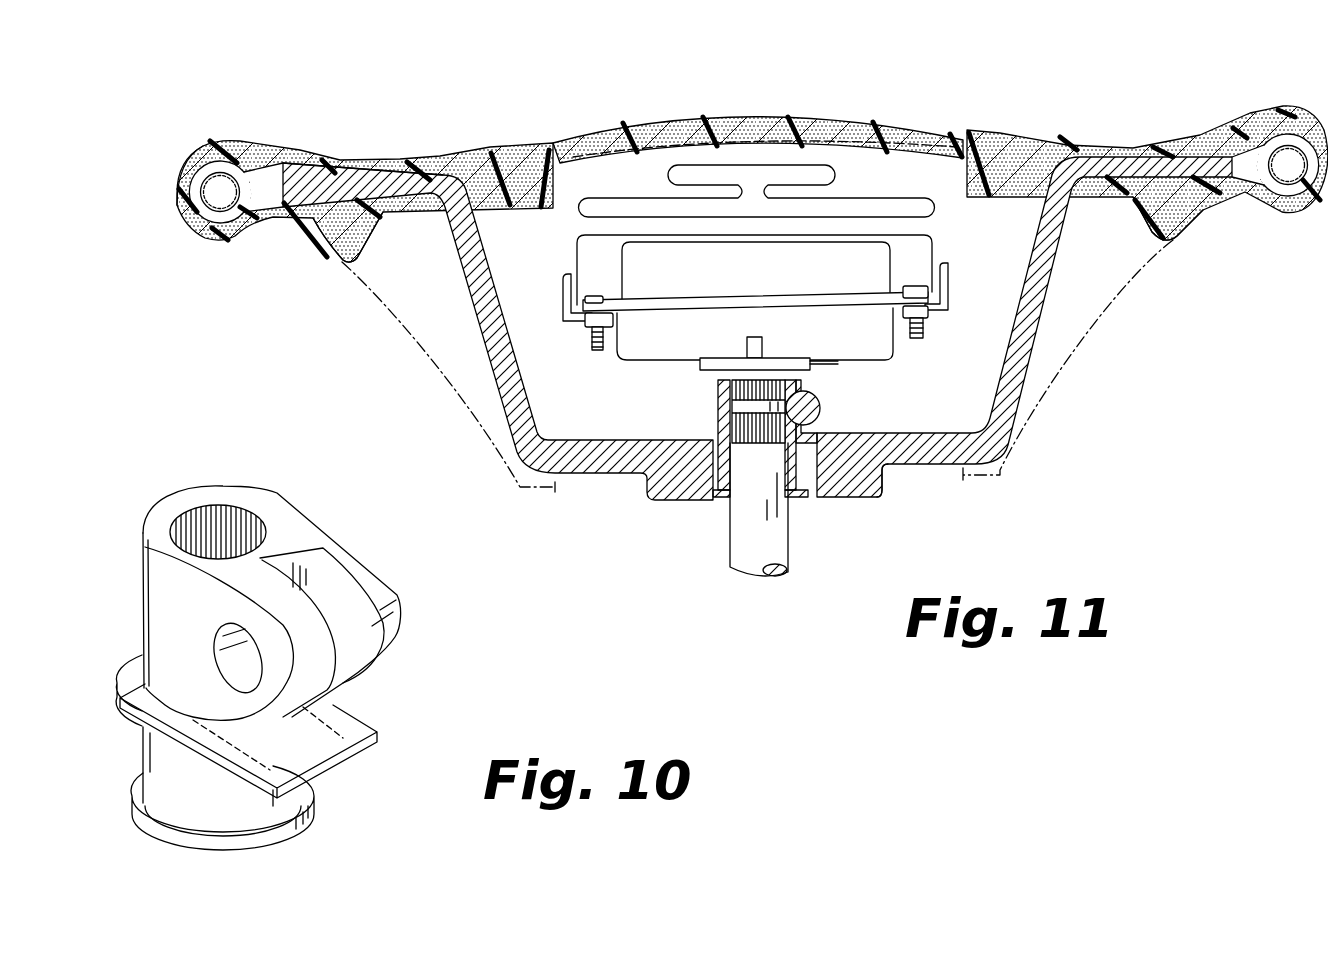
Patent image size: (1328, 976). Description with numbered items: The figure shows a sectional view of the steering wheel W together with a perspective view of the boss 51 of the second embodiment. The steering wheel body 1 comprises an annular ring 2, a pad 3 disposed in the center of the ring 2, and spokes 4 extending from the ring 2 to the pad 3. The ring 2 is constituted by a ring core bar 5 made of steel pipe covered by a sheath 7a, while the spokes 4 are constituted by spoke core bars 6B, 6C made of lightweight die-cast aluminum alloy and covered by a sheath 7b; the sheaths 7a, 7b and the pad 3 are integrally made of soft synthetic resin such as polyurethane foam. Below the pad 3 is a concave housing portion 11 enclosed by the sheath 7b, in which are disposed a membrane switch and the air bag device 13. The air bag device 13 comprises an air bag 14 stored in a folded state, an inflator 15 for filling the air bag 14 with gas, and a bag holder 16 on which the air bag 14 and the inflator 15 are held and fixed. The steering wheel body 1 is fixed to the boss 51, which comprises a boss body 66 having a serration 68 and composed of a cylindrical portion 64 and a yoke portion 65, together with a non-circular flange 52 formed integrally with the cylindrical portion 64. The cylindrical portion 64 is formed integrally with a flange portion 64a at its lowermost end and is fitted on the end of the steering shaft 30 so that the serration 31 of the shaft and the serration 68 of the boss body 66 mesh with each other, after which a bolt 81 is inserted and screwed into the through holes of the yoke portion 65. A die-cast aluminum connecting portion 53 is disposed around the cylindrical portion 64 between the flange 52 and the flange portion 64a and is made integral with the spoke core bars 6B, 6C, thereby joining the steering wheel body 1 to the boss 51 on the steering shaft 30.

In FIG. 11, the steering wheel W is at (1033, 85).
In FIG. 11, the steering wheel body 1 is at (513, 106).
In FIG. 11, the ring 2 is at (220, 171).
In FIG. 11, the pad 3 is at (740, 117).
In FIG. 11, the spokes 4 is at (340, 159).
In FIG. 11, the ring core bar 5 is at (212, 213).
In FIG. 11, the spoke core bar 6B is at (298, 207).
In FIG. 11, the spoke core bar 6C is at (1226, 186).
In FIG. 11, the sheath 7a is at (181, 175).
In FIG. 11, the sheath 7b is at (343, 255).
In FIG. 11, the concave housing portion 11 is at (890, 186).
In FIG. 11, the air bag device 13 is at (568, 254).
In FIG. 11, the air bag 14 is at (936, 207).
In FIG. 11, the inflator 15 is at (628, 362).
In FIG. 11, the bag holder 16 is at (950, 290).
In FIG. 11, the steering shaft 30 is at (747, 572).
In FIG. 11, the serration 31 is at (760, 436).
In FIG. 11, the boss 51 is at (766, 461).
In FIG. 10, the boss 51 is at (257, 654).
In FIG. 11, the flange 52 is at (813, 438).
In FIG. 10, the flange 52 is at (352, 718).
In FIG. 11, the connecting portion 53 is at (879, 481).
In FIG. 11, the cylindrical portion 64 is at (717, 398).
In FIG. 10, the cylindrical portion 64 is at (143, 749).
In FIG. 11, the flange portion 64a is at (800, 499).
In FIG. 10, the flange portion 64a is at (158, 838).
In FIG. 10, the yoke portion 65 is at (300, 508).
In FIG. 10, the boss body 66 is at (132, 567).
In FIG. 10, the serration 68 is at (225, 512).
In FIG. 11, the bolt 81 is at (820, 392).